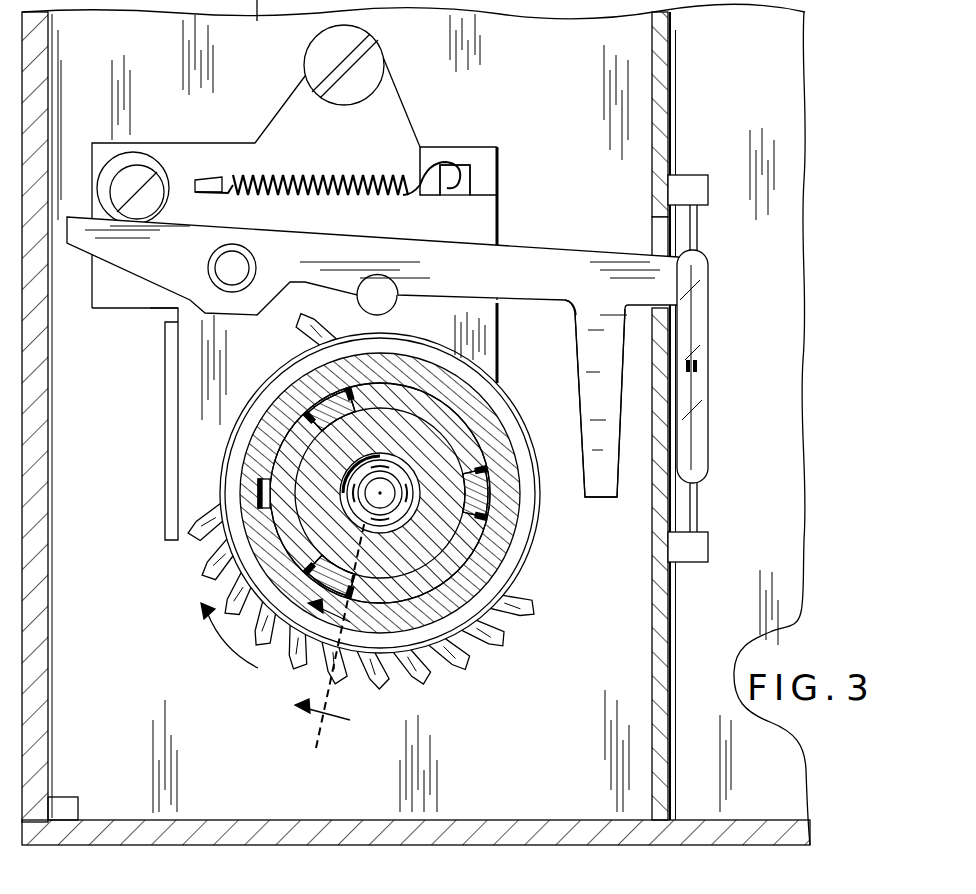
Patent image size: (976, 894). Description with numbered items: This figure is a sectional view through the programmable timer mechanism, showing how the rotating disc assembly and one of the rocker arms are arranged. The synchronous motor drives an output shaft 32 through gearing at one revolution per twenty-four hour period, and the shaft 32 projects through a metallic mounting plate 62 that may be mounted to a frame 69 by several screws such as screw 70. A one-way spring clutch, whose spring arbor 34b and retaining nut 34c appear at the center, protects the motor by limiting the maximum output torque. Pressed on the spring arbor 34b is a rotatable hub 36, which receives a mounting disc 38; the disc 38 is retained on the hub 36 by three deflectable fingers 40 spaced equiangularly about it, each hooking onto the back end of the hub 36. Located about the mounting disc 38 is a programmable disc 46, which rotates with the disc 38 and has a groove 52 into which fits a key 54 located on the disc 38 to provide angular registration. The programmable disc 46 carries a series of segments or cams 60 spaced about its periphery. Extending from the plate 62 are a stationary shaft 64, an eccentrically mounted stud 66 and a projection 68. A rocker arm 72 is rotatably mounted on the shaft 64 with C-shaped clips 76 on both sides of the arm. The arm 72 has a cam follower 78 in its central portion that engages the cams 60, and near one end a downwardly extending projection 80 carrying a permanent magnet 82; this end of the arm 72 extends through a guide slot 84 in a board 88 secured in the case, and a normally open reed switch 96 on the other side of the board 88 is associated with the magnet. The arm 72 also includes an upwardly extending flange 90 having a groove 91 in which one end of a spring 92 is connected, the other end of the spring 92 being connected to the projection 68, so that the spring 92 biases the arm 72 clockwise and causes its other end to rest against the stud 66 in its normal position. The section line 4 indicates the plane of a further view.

The section line 4- 4 is at (338, 634).
The output shaft 32 is at (380, 487).
The spring arbor 34b is at (345, 492).
The retaining nut 34c is at (380, 522).
The hub 36 is at (418, 426).
The mounting disc 38 is at (453, 428).
The deflectable fingers 40 is at (343, 403).
The programmable disc 46 is at (513, 551).
The groove 52 is at (258, 495).
The key 54 is at (258, 481).
The segments or cams 60 is at (310, 326).
The mounting plate 62 is at (242, 143).
The stationary shaft 64 is at (240, 270).
The eccentrically mounted stud 66 is at (166, 172).
The projection 68 is at (470, 167).
The frame 69 is at (782, 60).
The screw 70 is at (365, 63).
The rocker arm 72 is at (553, 270).
The C-shaped clips 76 is at (212, 268).
The cam follower 78 is at (396, 300).
The downwardly extending projection 80 is at (583, 318).
The permanent magnet 82 is at (603, 488).
The guide slot 84 is at (657, 231).
The board 88 is at (655, 97).
The upwardly extending flange 90 is at (220, 180).
The groove 91 is at (203, 180).
The spring 92 is at (326, 174).
The reed switch 96 is at (708, 424).